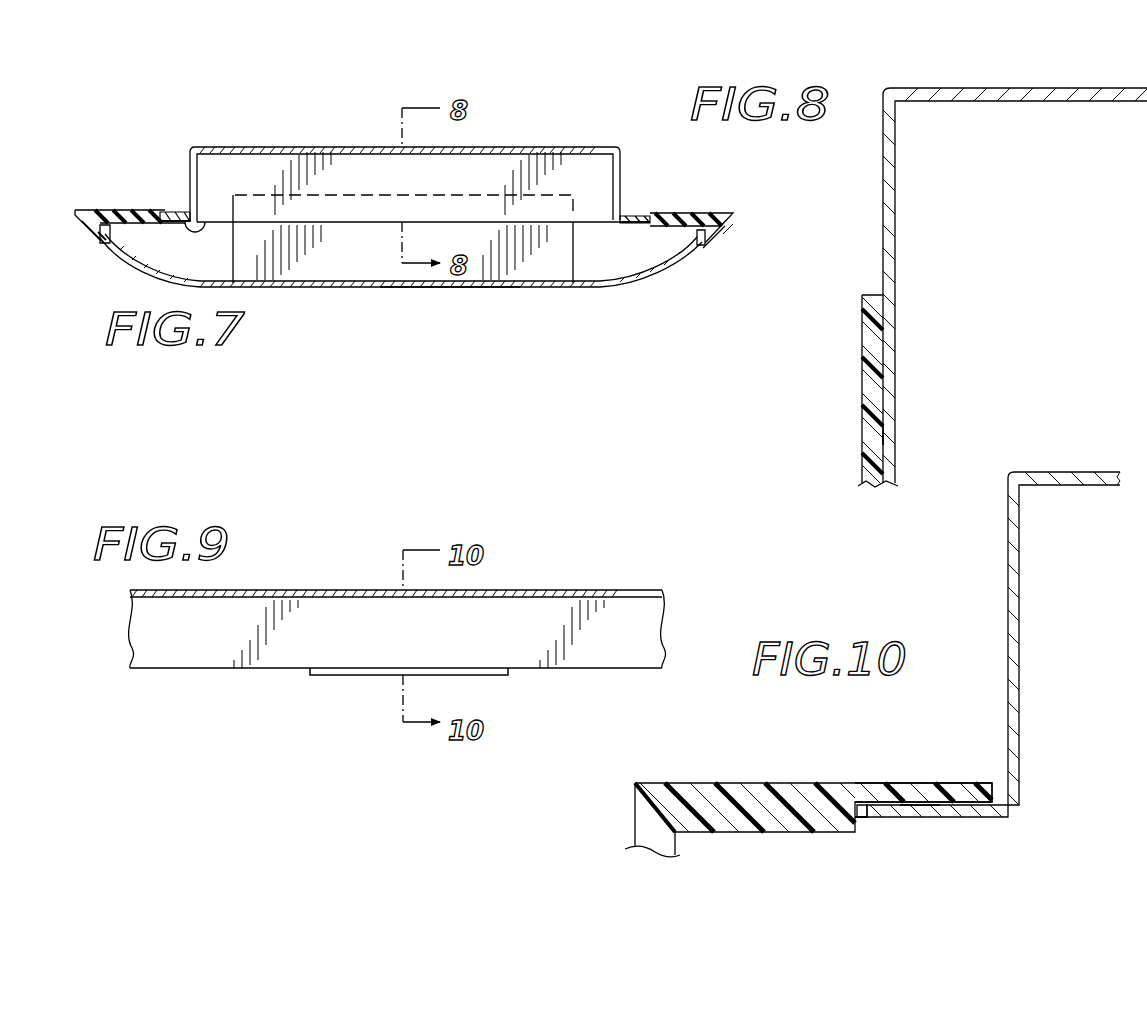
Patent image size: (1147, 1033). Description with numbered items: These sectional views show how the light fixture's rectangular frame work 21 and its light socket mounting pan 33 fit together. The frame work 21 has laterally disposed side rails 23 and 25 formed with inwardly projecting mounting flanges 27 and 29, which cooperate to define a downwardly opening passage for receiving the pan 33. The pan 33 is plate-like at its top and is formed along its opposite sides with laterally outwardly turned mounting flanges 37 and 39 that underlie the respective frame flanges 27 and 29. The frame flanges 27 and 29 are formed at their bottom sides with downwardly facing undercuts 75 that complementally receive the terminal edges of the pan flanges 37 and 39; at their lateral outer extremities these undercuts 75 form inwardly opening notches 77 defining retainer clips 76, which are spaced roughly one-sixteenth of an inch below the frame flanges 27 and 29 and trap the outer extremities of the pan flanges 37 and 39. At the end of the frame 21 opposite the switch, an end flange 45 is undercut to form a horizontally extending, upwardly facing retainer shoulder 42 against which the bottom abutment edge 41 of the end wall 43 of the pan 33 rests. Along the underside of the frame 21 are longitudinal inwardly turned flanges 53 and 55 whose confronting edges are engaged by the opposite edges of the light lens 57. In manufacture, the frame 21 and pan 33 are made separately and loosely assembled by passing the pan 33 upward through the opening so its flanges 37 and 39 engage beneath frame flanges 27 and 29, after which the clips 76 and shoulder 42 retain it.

In FIG. 7, the rectangular frame work 21 is at (678, 174).
In FIG. 7, the side rail 23 is at (122, 208).
In FIG. 10, the side rail 23 is at (758, 781).
In FIG. 7, the side rail 25 is at (686, 211).
In FIG. 9, the side rail 25 is at (482, 673).
In FIG. 7, the mounting flange 27 is at (173, 211).
In FIG. 10, the mounting flange 27 is at (948, 782).
In FIG. 7, the mounting flange 29 is at (630, 215).
In FIG. 7, the light socket mounting pan 33 is at (560, 147).
In FIG. 8, the light socket mounting pan 33 is at (1052, 87).
In FIG. 9, the light socket mounting pan 33 is at (513, 588).
In FIG. 10, the light socket mounting pan 33 is at (1055, 471).
In FIG. 7, the mounting flange 37 is at (198, 224).
In FIG. 10, the mounting flange 37 is at (978, 818).
In FIG. 7, the mounting flange 39 is at (632, 223).
In FIG. 8, the bottom abutment edge 41 is at (887, 440).
In FIG. 7, the retainer shoulder 42 is at (315, 222).
In FIG. 8, the retainer shoulder 42 is at (886, 430).
In FIG. 7, the end wall 43 is at (418, 184).
In FIG. 8, the end wall 43 is at (895, 220).
In FIG. 7, the end flange 45 is at (373, 256).
In FIG. 8, the end flange 45 is at (860, 350).
In FIG. 7, the inwardly turned flange 53 is at (102, 238).
In FIG. 7, the inwardly turned flange 55 is at (705, 242).
In FIG. 7, the light lens 57 is at (450, 292).
In FIG. 7, the undercut 75 is at (170, 223).
In FIG. 10, the undercut 75 is at (928, 806).
In FIG. 7, the retainer clip 76 is at (162, 222).
In FIG. 10, the retainer clip 76 is at (862, 819).
In FIG. 10, the notch 77 is at (873, 804).